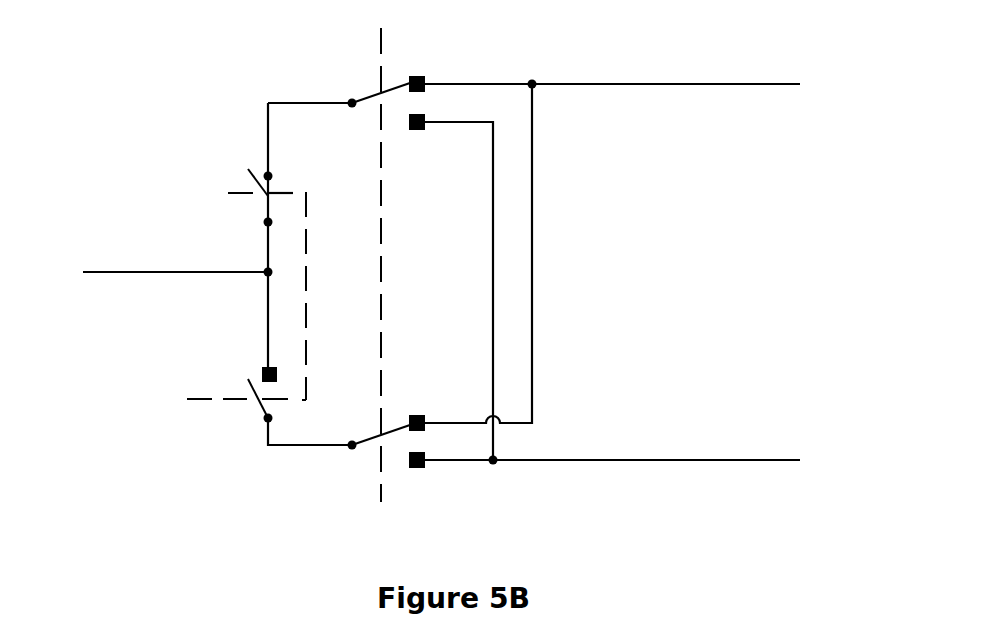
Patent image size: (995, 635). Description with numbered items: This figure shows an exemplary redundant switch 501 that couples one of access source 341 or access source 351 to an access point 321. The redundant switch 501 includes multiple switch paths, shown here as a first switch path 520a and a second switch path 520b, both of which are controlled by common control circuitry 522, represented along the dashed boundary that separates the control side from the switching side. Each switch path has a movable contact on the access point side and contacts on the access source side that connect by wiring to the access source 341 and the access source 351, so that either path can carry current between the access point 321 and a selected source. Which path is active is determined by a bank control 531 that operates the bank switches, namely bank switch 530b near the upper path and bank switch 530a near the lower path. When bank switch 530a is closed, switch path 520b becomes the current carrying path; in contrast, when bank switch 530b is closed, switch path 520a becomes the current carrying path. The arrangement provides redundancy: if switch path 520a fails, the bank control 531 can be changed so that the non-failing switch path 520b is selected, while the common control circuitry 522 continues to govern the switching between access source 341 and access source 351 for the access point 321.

The switch path 520a is at (365, 95).
The switch path 520b is at (363, 447).
The bank switch 530b is at (248, 169).
The bank switch 530a is at (258, 410).
The access point 321 is at (170, 235).
The bank control 531 is at (158, 372).
The access source 341 is at (702, 57).
The access source 351 is at (700, 432).
The common control circuitry 522 is at (590, 508).
The redundant switch 501 is at (745, 248).